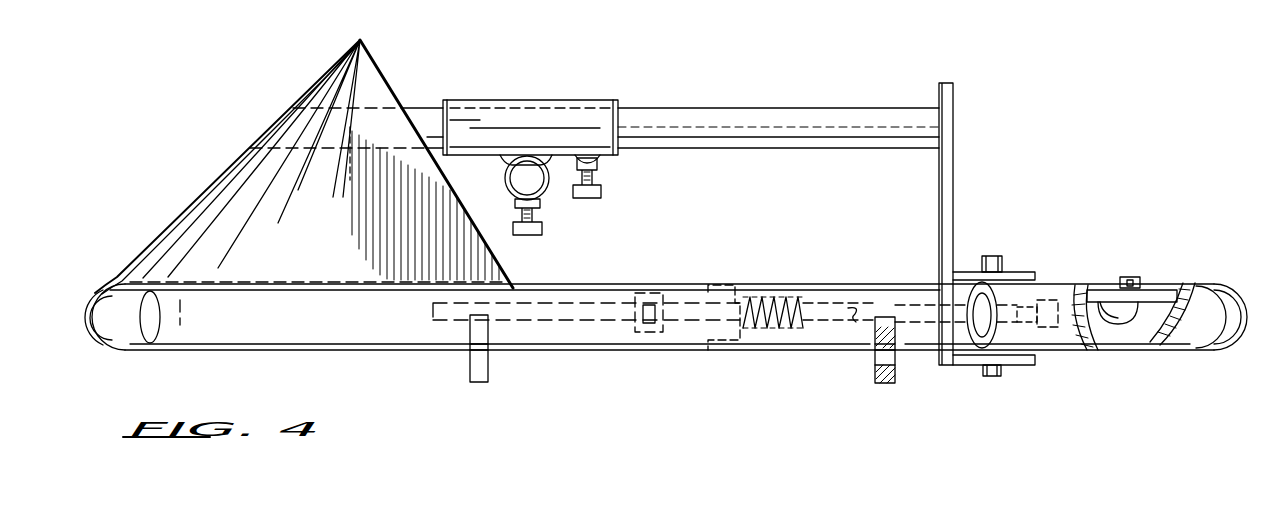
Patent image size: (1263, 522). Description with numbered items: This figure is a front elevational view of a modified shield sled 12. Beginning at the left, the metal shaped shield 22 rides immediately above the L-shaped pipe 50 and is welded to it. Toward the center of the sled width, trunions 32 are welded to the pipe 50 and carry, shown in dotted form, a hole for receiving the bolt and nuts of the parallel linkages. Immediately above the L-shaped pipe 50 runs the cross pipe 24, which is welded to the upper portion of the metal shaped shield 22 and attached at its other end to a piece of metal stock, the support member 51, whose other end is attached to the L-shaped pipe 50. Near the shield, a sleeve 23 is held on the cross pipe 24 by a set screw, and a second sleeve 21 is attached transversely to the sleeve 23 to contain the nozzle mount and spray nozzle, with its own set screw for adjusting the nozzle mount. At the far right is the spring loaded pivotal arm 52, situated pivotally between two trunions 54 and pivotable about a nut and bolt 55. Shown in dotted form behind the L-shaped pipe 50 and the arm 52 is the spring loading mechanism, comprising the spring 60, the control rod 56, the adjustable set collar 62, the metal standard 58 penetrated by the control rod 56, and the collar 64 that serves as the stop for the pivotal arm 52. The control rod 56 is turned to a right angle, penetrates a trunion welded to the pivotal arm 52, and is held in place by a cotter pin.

The modified shield sled 12 is at (992, 85).
The second sleeve 21 is at (548, 190).
The metal shaped shield 22 is at (308, 226).
The sleeve 23 is at (572, 100).
The cross pipe 24 is at (755, 110).
The trunions 32 is at (470, 374).
The L-shaped pipe 50 is at (332, 329).
The support member 51 is at (953, 183).
The spring loaded pivotal arm 52 is at (1215, 284).
The trunions 54 is at (1040, 272).
The nut and bolt 55 is at (1000, 272).
The control rod 56 is at (837, 325).
The metal standard 58 is at (713, 345).
The spring 60 is at (786, 335).
The adjustable set collar 62 is at (1050, 327).
The collar 64 is at (640, 335).